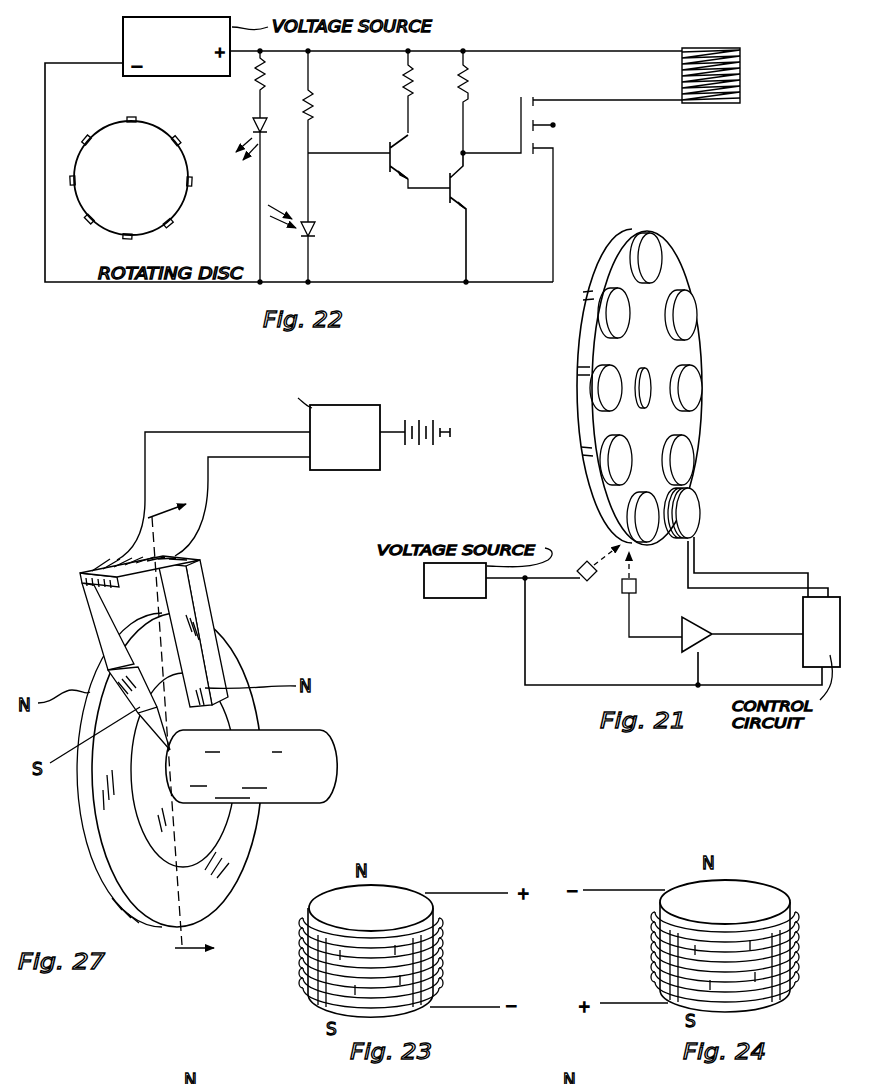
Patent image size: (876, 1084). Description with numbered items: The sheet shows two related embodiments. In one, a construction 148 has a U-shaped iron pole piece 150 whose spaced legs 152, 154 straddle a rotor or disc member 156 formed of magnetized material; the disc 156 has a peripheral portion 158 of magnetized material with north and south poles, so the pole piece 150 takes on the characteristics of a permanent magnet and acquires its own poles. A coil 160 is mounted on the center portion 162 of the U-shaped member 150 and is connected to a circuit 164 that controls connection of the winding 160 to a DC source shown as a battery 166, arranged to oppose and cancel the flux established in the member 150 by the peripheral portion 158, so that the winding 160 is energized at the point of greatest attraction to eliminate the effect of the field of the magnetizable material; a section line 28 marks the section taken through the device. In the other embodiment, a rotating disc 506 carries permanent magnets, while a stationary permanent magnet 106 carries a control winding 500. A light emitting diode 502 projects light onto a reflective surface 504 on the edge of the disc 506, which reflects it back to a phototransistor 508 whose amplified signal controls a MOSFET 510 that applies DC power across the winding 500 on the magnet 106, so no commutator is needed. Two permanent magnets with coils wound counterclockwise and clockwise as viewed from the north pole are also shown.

In FIG. 22, the stationary permanent magnet 106 is at (704, 48).
In FIG. 21, the stationary permanent magnet 106 is at (700, 520).
In FIG. 22, the control winding 500 is at (726, 59).
In FIG. 21, the control winding 500 is at (732, 523).
In FIG. 22, the light emitting diode 502 is at (250, 112).
In FIG. 21, the light emitting diode 502 is at (592, 587).
In FIG. 22, the reflective surface 504 is at (135, 238).
In FIG. 21, the reflective surface 504 is at (585, 368).
In FIG. 22, the rotating disc 506 is at (152, 193).
In FIG. 21, the rotating disc 506 is at (632, 387).
In FIG. 22, the phototransistor 508 is at (318, 226).
In FIG. 21, the phototransistor 508 is at (637, 585).
In FIG. 22, the MOSFET 510 is at (530, 92).
In FIG. 27, the construction 148 is at (263, 658).
In FIG. 27, the U-shaped iron pole piece 150 is at (168, 639).
In FIG. 27, the leg 152 is at (206, 658).
In FIG. 27, the leg 154 is at (95, 612).
In FIG. 27, the rotor or disc member 156 is at (266, 712).
In FIG. 27, the peripheral portion 158 is at (238, 862).
In FIG. 27, the coil 160 is at (111, 562).
In FIG. 27, the center portion 162 is at (176, 574).
In FIG. 27, the circuit 164 is at (348, 472).
In FIG. 27, the battery 166 is at (452, 432).
In FIG. 27, the section line 28- 28 is at (181, 733).